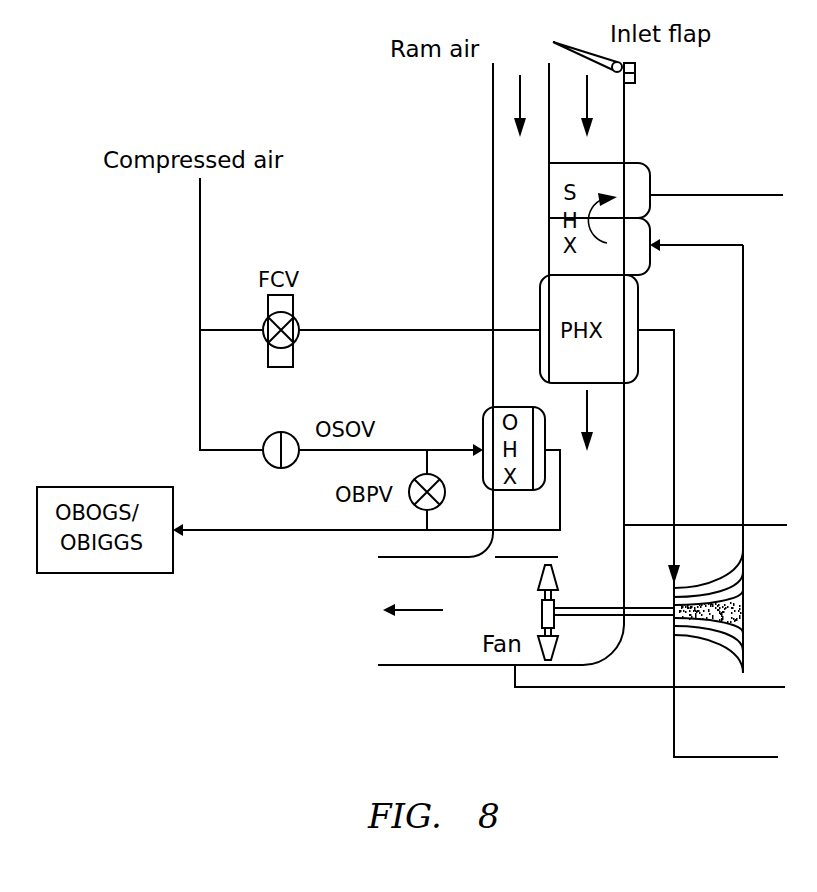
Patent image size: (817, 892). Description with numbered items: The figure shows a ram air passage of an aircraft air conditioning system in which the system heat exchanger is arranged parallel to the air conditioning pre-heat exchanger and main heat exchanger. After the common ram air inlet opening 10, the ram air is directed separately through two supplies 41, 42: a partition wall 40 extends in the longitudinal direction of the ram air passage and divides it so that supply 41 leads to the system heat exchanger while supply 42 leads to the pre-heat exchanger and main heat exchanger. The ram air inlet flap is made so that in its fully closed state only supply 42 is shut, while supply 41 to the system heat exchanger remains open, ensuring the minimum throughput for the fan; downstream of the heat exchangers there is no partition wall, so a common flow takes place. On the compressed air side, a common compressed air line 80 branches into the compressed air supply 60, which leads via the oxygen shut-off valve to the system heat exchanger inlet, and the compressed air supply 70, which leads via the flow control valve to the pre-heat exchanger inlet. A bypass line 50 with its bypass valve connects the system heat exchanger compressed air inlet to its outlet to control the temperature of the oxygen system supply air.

The common ram air inlet opening 10 is at (552, 53).
The partition wall 40 is at (547, 153).
The supply 41 is at (515, 178).
The supply 42 is at (612, 120).
The bypass line 50 is at (423, 515).
The compressed air supply 60 is at (232, 448).
The compressed air supply 70 is at (395, 322).
The common compressed air line 80 is at (200, 243).